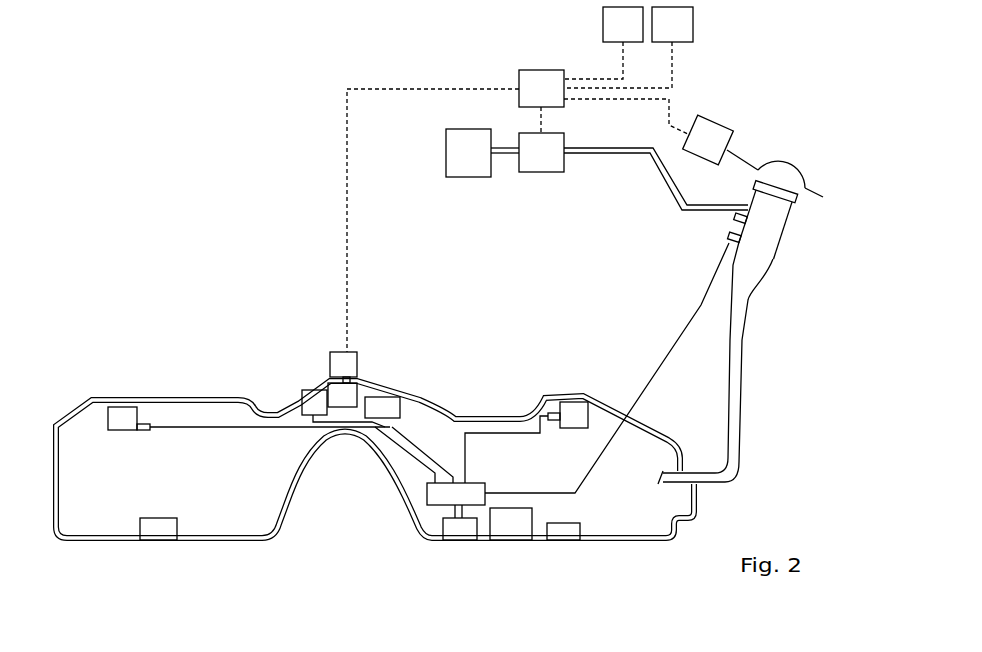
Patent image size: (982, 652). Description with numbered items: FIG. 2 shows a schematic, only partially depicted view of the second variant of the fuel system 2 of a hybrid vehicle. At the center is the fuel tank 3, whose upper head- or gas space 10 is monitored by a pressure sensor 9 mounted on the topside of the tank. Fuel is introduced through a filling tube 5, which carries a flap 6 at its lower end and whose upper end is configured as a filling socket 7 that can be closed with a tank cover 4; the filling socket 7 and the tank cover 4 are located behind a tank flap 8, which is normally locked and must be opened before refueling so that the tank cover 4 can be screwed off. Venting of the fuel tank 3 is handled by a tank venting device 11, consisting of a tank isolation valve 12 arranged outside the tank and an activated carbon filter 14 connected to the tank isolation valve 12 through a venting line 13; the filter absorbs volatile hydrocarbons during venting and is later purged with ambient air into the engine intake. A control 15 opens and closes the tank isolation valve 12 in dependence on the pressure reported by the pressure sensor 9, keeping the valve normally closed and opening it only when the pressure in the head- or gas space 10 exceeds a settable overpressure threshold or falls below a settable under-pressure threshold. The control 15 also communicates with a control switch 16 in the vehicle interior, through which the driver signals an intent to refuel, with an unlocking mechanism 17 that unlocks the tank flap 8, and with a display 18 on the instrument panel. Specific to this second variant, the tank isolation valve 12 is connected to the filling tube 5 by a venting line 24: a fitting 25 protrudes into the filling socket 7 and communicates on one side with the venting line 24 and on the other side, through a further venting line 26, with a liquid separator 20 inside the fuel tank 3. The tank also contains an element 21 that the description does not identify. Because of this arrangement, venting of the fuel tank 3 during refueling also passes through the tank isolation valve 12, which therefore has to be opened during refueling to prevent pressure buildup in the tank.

The fuel system 2 is at (447, 300).
The fuel tank 3 is at (160, 393).
The tank cover 4 is at (797, 198).
The filling tube 5 is at (738, 392).
The flap 6 is at (665, 478).
The filling socket 7 is at (773, 225).
The tank flap 8 is at (785, 162).
The pressure sensor 9 is at (330, 354).
The head- or gas space 10 is at (372, 393).
The tank venting device 11 is at (547, 179).
The tank isolation valve 12 is at (552, 165).
The venting line 13 is at (505, 156).
The activated carbon filter 14 is at (478, 170).
The control 15 is at (552, 101).
The control switch 16 is at (634, 37).
The unlocking mechanism 17 is at (722, 118).
The display 18 is at (683, 37).
The liquid separator 20 is at (480, 490).
The sensor 21 is at (460, 532).
The venting line 24 is at (697, 212).
The fitting 25 is at (747, 238).
The venting line 26 is at (680, 336).